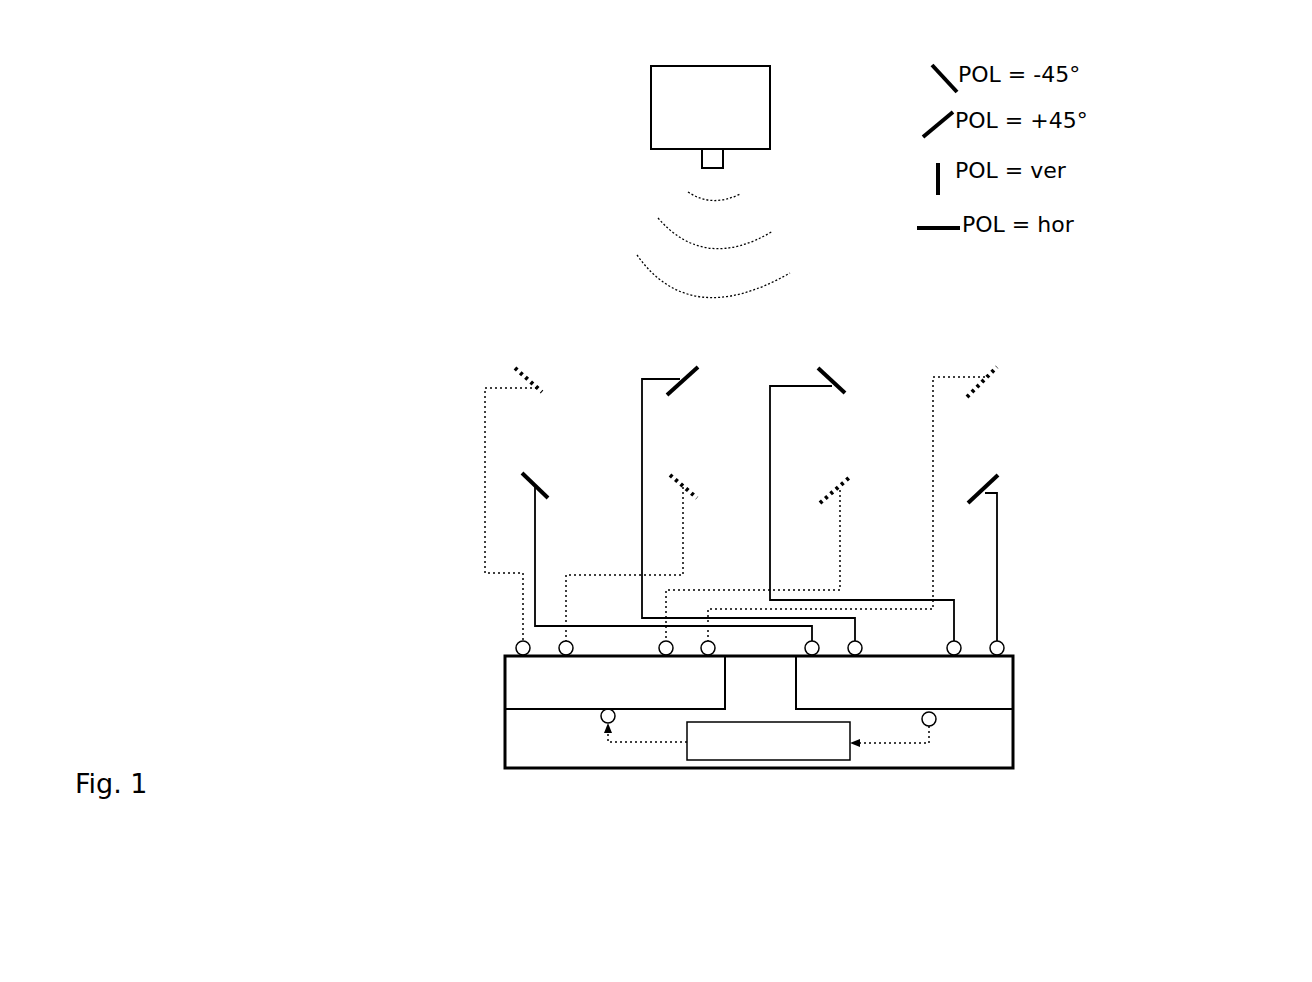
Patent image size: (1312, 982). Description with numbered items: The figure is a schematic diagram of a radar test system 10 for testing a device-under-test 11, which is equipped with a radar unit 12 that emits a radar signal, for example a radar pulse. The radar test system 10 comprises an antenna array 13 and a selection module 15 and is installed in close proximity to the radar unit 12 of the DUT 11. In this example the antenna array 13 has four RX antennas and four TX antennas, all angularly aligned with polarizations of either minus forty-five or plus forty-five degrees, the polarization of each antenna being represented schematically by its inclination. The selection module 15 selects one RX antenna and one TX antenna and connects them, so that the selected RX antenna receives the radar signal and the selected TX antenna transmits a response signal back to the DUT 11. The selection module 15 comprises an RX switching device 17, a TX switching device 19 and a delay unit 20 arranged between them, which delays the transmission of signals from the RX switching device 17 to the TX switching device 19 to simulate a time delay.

The radar test system 10 is at (1188, 369).
The device-under-test (DUT) 11 is at (650, 103).
The radar unit 12 is at (697, 160).
The antenna array 13 is at (413, 332).
The selection module 15 is at (1003, 741).
The RX switching device 17 is at (998, 685).
The TX switching device 19 is at (510, 688).
The delay unit 20 is at (802, 745).